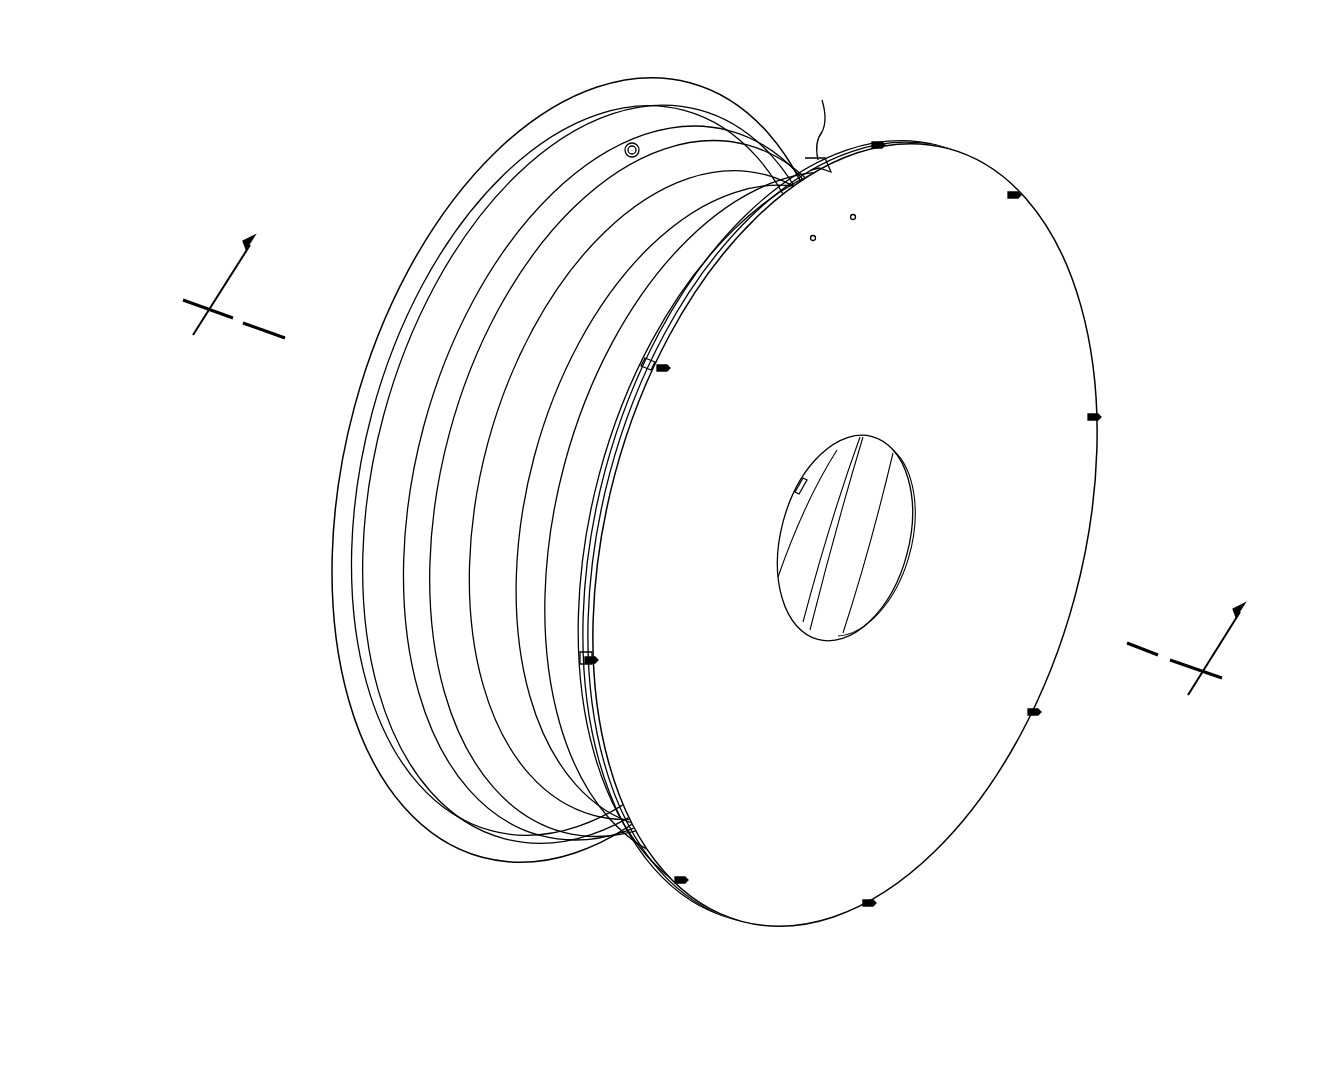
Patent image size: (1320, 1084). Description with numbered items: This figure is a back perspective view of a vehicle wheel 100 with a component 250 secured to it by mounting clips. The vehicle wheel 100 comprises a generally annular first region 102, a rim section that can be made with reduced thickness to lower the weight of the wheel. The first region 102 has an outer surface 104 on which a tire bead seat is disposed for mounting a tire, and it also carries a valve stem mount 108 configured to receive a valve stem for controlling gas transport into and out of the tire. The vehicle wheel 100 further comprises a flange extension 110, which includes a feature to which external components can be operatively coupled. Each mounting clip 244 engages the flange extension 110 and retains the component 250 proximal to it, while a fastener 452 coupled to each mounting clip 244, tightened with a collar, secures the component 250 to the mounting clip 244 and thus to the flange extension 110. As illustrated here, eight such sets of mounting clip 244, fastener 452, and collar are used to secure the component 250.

The vehicle wheel 100 is at (1066, 108).
The first region 102 is at (520, 290).
The outer surface 104 is at (740, 175).
The valve stem mount 108 is at (630, 146).
The flange extension 110 is at (605, 843).
The mounting clip 244 is at (647, 358).
The component 250 is at (1020, 347).
The fastener 452 is at (878, 146).